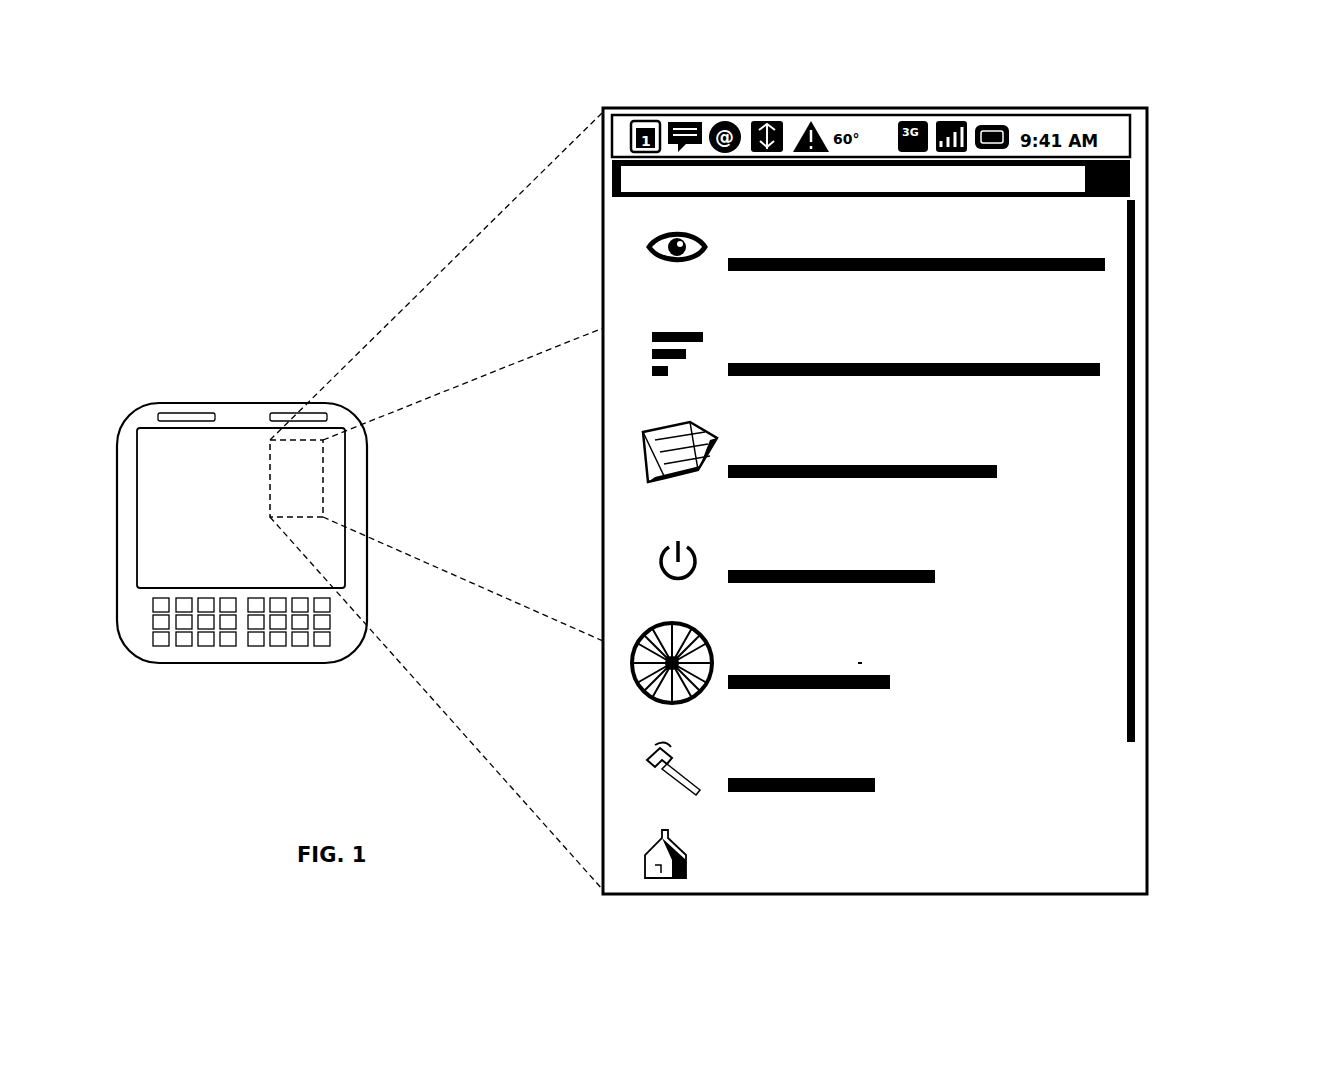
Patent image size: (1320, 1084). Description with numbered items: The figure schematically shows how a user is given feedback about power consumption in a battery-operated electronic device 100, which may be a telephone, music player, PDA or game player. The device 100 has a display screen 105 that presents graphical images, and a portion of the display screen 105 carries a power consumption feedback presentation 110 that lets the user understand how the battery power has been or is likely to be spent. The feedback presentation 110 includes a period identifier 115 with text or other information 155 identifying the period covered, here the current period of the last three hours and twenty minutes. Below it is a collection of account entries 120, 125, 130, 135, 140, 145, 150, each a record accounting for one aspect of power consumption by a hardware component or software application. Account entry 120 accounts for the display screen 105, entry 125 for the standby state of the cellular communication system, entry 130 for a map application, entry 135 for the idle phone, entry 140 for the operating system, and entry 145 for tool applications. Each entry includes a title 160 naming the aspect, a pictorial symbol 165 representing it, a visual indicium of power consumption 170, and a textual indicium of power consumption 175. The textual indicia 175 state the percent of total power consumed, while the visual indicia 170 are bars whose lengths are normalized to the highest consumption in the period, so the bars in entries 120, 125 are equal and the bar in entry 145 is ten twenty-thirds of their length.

The battery-operated electronic device 100 is at (200, 338).
The display screen 105 is at (192, 500).
The power consumption feedback presentation 110 is at (307, 479).
The period identifier 115 is at (612, 182).
The information identifying the period of time 155 is at (985, 168).
The account entry 120 is at (1160, 278).
The account entry 125 is at (1160, 388).
The account entry 130 is at (1160, 486).
The account entry 135 is at (1160, 601).
The account entry 140 is at (1160, 706).
The account entry 145 is at (1160, 816).
The account entry 150 is at (1160, 904).
The title 160 is at (805, 228).
The pictorial symbol 165 is at (664, 262).
The visual indicium of power consumption 170 is at (902, 271).
The textual indicium of power consumption 175 is at (1053, 230).